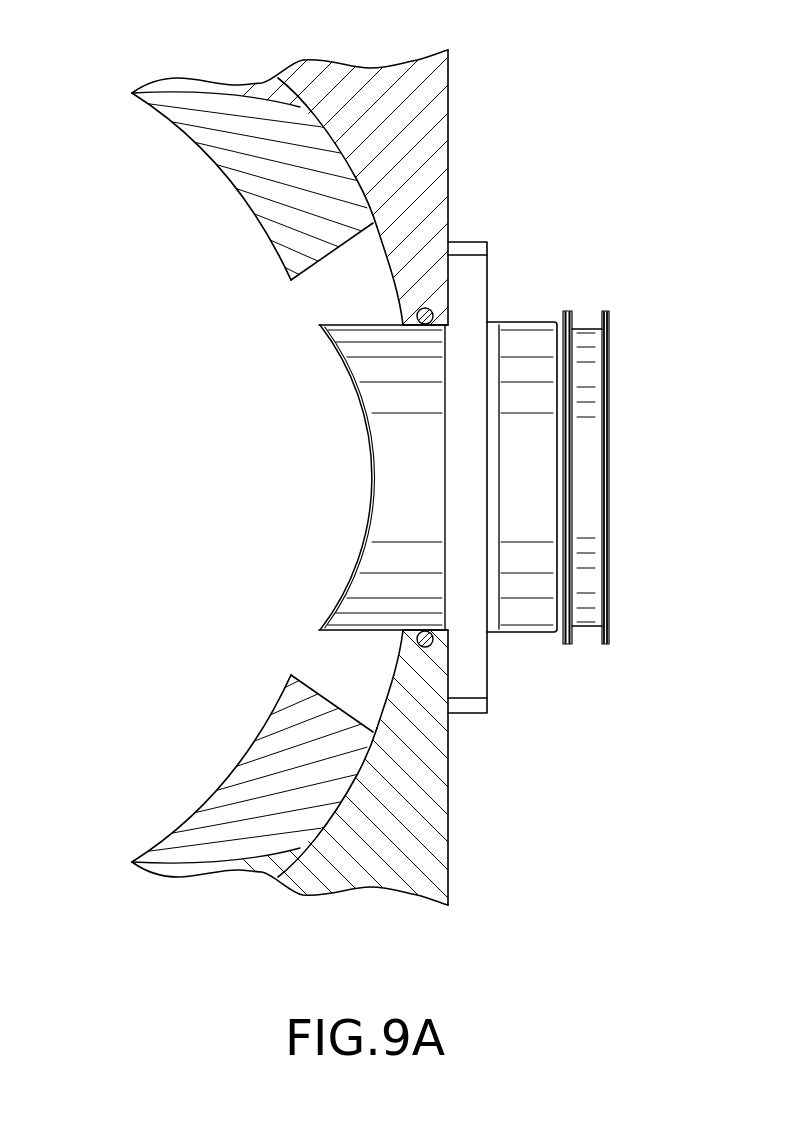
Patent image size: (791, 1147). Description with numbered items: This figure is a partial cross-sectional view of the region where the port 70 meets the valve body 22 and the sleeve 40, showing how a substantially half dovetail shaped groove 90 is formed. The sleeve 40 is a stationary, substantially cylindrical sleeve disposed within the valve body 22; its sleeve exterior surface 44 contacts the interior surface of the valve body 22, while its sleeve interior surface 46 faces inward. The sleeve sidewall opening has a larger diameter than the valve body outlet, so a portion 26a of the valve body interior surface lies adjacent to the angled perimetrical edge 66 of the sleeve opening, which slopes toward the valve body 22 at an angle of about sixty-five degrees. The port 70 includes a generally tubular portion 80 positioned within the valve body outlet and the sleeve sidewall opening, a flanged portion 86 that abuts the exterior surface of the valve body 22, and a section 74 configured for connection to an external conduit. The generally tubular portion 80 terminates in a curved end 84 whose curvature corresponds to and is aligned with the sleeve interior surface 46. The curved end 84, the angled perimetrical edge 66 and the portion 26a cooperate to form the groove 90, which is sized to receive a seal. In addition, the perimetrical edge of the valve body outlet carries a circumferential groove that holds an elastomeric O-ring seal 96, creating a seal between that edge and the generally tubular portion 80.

The valve body 22 is at (450, 140).
The sleeve 40 is at (156, 112).
The sleeve exterior surface 44 is at (317, 118).
The sleeve interior surface 46 is at (220, 166).
The angled perimetrical edge 66 is at (310, 265).
The portion of interior surface 26a is at (388, 247).
The groove 90 is at (324, 299).
The curved end 84 is at (372, 438).
The generally tubular portion 80 is at (405, 513).
The seal 96 is at (424, 324).
The flanged portion 86 is at (486, 272).
The port 70 is at (527, 632).
The section 74 is at (573, 327).